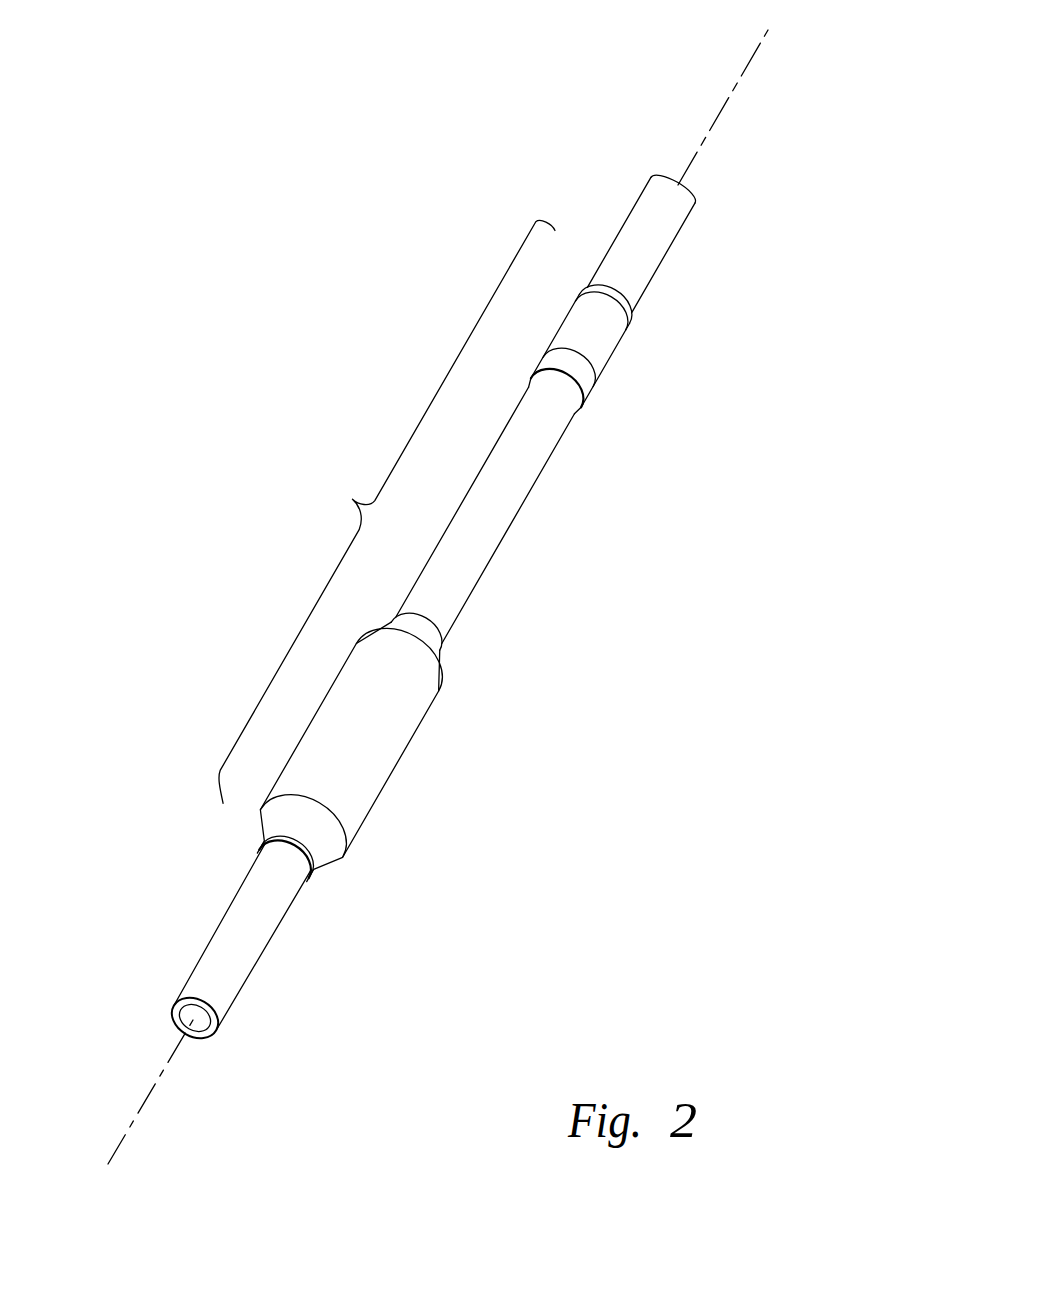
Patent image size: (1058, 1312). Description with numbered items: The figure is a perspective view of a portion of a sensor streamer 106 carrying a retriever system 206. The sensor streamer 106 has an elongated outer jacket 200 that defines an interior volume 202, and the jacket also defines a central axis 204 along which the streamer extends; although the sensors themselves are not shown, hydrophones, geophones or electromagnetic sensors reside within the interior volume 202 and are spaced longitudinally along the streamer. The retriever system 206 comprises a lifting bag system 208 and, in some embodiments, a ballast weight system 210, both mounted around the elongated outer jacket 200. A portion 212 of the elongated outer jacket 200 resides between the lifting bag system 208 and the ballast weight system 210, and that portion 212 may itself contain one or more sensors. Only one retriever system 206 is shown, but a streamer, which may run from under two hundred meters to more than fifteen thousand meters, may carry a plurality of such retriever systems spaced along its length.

The sensor streamer 106 is at (409, 633).
The elongated outer jacket 200 is at (203, 970).
The interior volume 202 is at (196, 1019).
The central axis 204 is at (148, 1100).
The retriever system 206 is at (372, 506).
The lifting bag system 208 is at (414, 802).
The ballast weight system 210 is at (640, 383).
The portion of the elongated outer jacket 212 is at (547, 551).